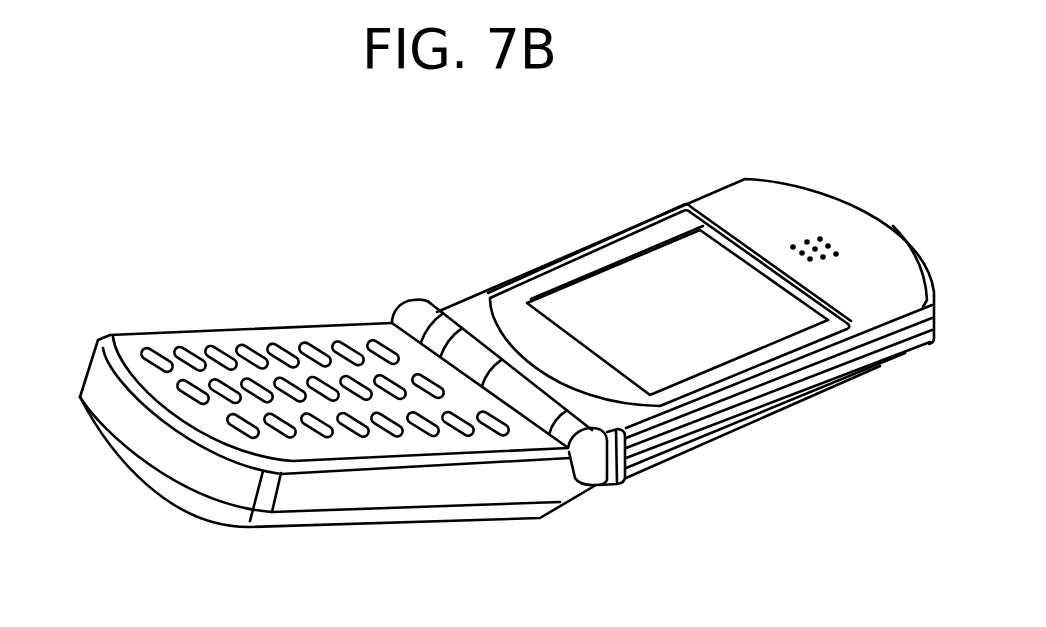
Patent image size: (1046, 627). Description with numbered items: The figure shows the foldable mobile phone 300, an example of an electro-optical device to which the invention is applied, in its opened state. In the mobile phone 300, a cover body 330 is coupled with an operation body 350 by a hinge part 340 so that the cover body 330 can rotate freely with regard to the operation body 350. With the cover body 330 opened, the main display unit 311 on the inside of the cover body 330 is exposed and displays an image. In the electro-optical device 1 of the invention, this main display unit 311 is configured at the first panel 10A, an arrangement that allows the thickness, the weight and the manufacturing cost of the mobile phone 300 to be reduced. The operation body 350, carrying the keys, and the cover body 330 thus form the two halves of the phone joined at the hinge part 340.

The foldable mobile phone 300 is at (241, 275).
The hinge part 340 is at (405, 284).
The operation body 350 is at (479, 492).
The cover body 330 is at (768, 198).
The main display unit 311 is at (707, 347).
The electro-optical device 1 is at (677, 310).
The first panel 10A is at (677, 310).